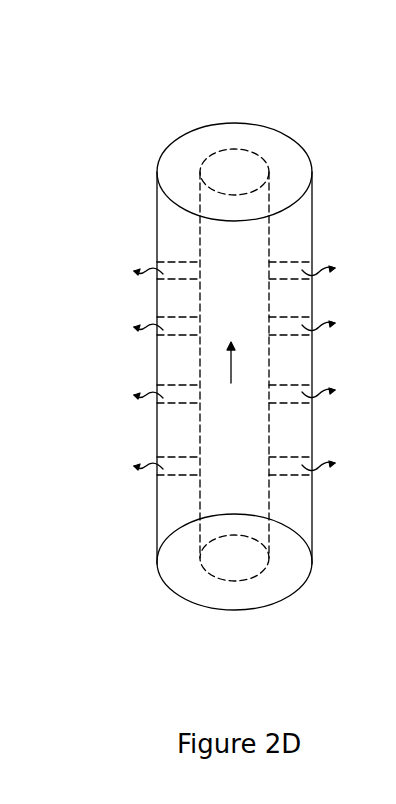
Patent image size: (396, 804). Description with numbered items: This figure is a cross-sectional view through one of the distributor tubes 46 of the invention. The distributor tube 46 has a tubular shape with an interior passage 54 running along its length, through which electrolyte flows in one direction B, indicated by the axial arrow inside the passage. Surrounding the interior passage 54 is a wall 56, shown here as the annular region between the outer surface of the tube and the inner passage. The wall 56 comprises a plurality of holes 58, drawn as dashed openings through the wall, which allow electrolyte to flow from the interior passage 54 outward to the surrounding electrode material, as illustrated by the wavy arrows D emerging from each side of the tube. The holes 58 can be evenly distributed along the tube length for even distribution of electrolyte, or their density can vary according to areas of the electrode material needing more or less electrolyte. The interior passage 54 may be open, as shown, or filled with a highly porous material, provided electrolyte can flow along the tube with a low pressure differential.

The distributor tube 46 is at (245, 123).
The interior passage 54 is at (233, 266).
The wall 56 is at (282, 432).
The holes 58 is at (287, 392).
The arrows indicating flow of electrolyte D is at (312, 327).
The direction of electrolyte flow B is at (236, 385).